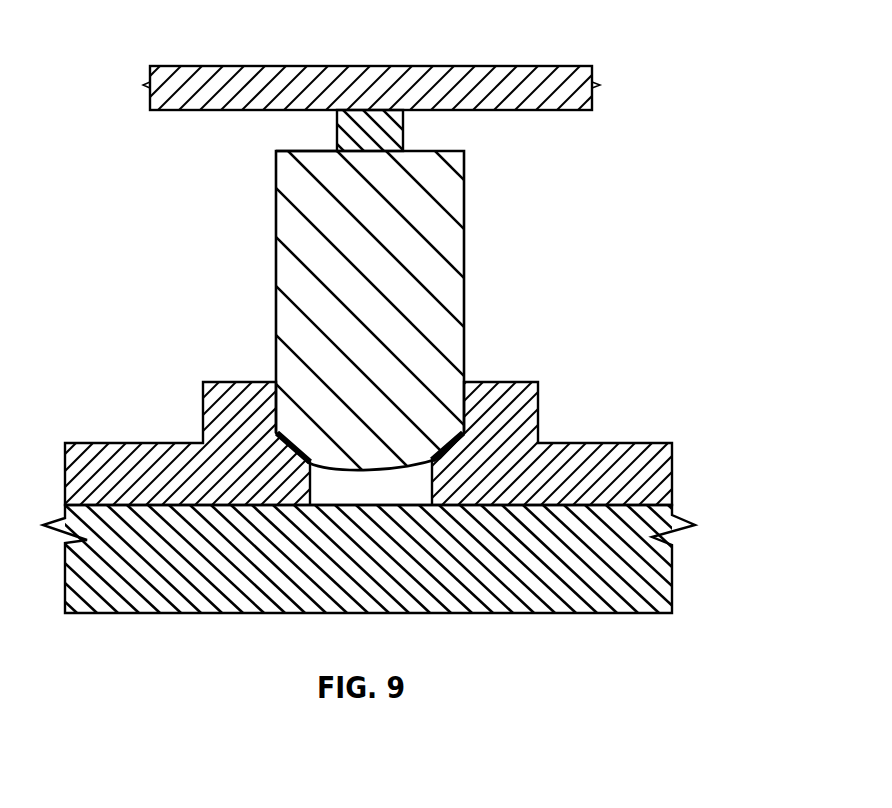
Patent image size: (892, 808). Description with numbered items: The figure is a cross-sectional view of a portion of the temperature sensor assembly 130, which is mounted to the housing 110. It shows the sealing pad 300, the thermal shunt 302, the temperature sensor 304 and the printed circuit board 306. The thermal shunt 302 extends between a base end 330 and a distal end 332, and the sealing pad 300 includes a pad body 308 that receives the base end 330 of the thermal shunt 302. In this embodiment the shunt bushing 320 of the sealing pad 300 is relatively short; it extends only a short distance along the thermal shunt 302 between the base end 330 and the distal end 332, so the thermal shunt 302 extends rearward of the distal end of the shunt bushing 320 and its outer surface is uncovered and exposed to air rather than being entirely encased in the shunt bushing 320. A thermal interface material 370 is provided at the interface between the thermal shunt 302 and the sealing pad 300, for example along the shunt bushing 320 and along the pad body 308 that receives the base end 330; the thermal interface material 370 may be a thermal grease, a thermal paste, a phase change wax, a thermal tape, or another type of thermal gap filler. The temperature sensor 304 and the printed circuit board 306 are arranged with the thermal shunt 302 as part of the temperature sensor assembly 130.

The housing 110 is at (667, 563).
The temperature sensor assembly 130 is at (665, 63).
The sealing pad 300 is at (399, 412).
The thermal shunt 302 is at (411, 392).
The temperature sensor 304 is at (405, 124).
The printed circuit board 306 is at (535, 71).
The pad body 308 is at (668, 473).
The shunt bushing 320 is at (532, 393).
The base end 330 is at (345, 468).
The distal end 332 is at (284, 152).
The thermal interface material 370 is at (248, 381).